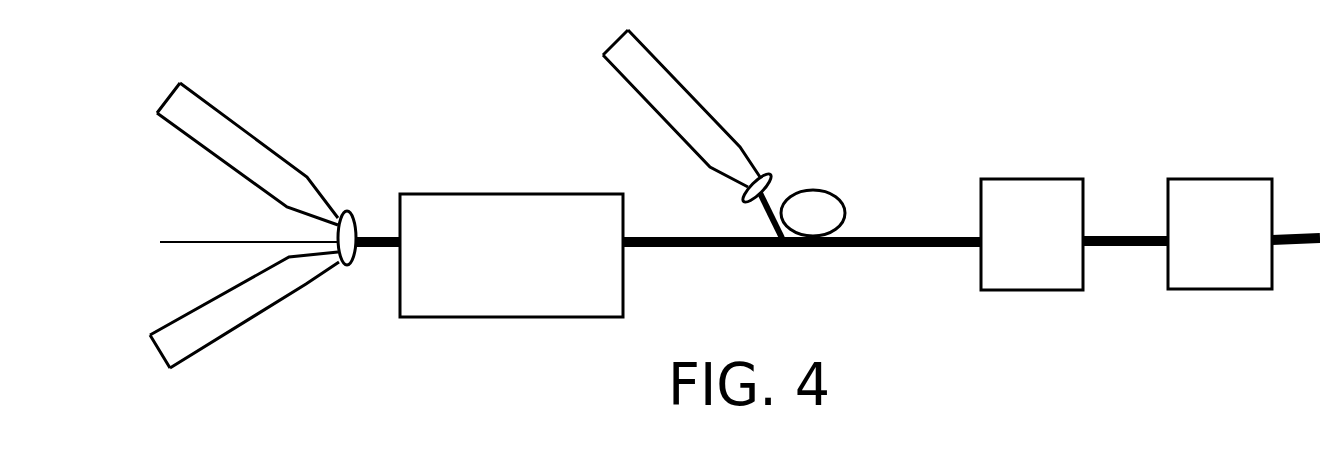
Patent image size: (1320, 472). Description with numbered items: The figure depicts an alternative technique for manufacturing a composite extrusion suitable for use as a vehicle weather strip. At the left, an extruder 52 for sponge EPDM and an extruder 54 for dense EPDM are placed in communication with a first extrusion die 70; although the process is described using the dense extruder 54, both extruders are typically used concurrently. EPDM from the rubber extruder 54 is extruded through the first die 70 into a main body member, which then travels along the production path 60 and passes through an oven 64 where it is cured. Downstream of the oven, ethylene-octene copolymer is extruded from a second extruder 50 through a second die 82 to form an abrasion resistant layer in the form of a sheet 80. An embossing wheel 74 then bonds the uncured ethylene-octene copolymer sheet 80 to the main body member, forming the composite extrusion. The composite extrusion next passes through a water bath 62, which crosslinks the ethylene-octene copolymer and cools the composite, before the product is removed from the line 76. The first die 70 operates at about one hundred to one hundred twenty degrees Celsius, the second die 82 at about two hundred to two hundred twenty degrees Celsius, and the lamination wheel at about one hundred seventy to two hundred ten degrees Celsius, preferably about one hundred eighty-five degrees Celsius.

The second extruder 50 is at (650, 65).
The extruder for sponge EPDM 52 is at (218, 147).
The extruder for dense EPDM 54 is at (217, 308).
The optical fiber backbone 60 is at (836, 240).
The water bath 62 is at (1015, 176).
The oven 64 is at (532, 191).
The first extrusion die 70 is at (357, 196).
The embossing wheel 74 is at (816, 185).
The line 76 is at (1214, 176).
The sheet 80 is at (779, 188).
The second die 82 is at (762, 163).